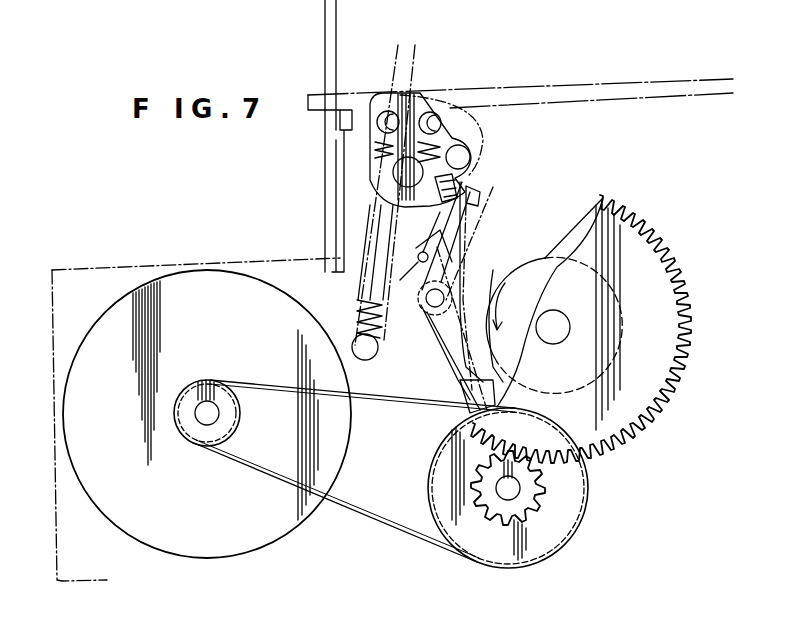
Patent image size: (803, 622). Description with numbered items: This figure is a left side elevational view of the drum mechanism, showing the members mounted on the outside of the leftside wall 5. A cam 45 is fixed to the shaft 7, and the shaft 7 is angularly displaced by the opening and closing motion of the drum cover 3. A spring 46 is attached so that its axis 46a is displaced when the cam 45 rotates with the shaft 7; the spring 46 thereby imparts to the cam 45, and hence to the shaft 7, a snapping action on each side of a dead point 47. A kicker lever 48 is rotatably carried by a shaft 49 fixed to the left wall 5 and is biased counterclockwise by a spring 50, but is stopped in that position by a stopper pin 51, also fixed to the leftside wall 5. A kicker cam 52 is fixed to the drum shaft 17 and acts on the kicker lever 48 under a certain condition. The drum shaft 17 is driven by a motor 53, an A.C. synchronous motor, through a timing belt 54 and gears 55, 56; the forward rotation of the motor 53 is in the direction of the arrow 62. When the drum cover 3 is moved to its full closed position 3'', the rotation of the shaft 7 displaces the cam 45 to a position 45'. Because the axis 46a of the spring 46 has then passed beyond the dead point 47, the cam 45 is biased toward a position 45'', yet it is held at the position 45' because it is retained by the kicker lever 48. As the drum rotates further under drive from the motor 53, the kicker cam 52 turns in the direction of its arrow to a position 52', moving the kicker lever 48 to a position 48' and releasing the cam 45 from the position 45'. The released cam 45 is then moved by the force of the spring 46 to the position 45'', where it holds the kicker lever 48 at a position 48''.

The drum cover 3 is at (321, 136).
The full closed position of the drum cover 3'' is at (520, 81).
The leftside wall 5 is at (97, 270).
The shaft 7 is at (392, 170).
The drum shaft 17 is at (562, 332).
The cam 45 is at (419, 187).
The displaced position of the cam 45' is at (447, 138).
The biased position of the cam 45'' is at (489, 159).
The spring 46 is at (358, 314).
The axis of the spring 46a is at (388, 85).
The dead point 47 is at (430, 90).
The kicker lever 48 is at (466, 297).
The displaced position of the kicker lever 48' is at (490, 243).
The held position of the kicker lever 48'' is at (488, 186).
The shaft 49 is at (425, 302).
The spring 50 is at (420, 260).
The stopper pin 51 is at (428, 242).
The kicker cam 52 is at (554, 314).
The rotated position of the kicker cam 52' is at (449, 333).
The motor 53 is at (98, 324).
The timing belt 54 is at (388, 522).
The gear 55 is at (540, 499).
The gear 56 is at (680, 372).
The arrow of forward rotation 62 is at (244, 398).